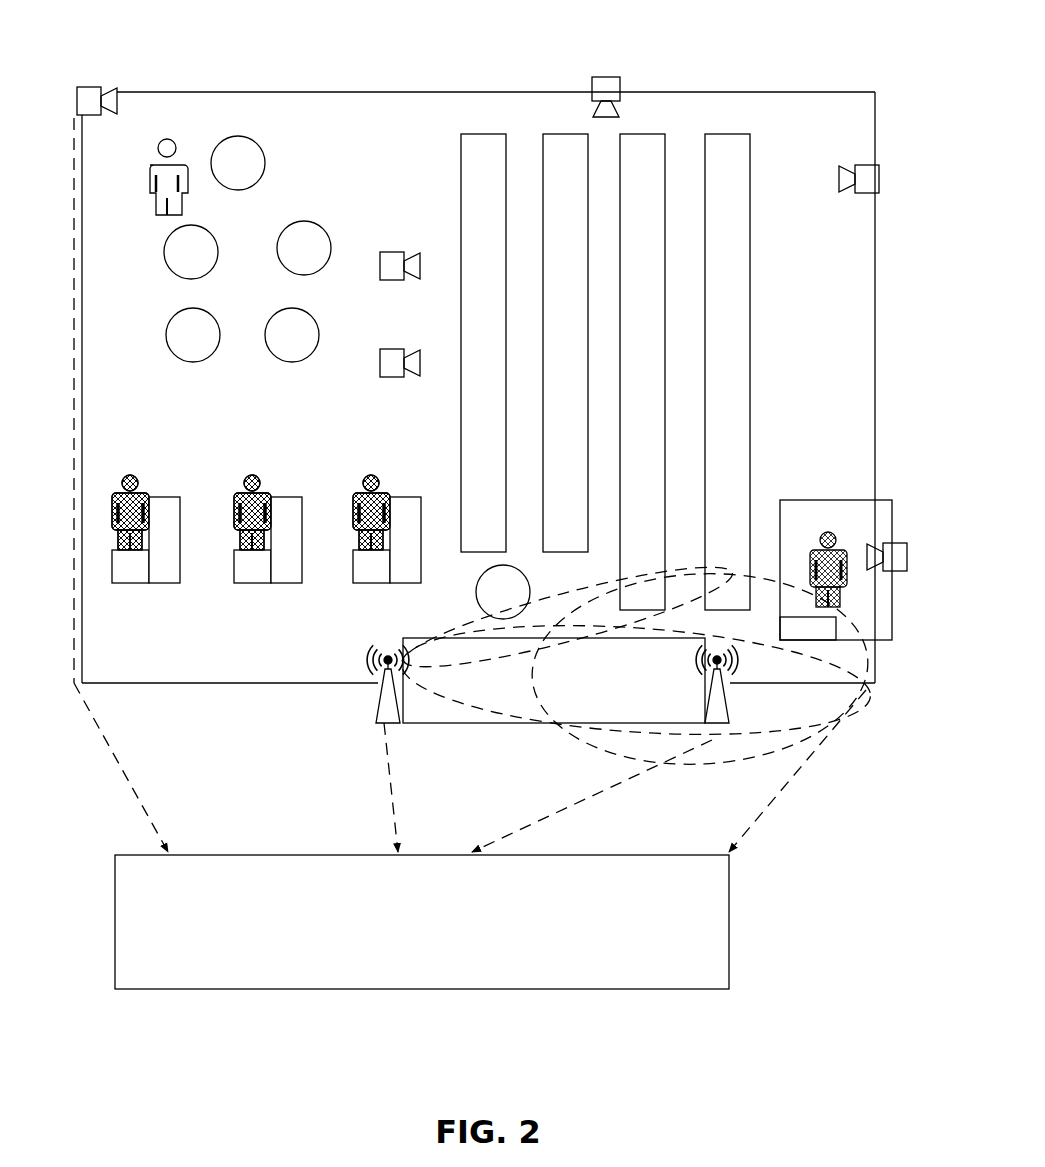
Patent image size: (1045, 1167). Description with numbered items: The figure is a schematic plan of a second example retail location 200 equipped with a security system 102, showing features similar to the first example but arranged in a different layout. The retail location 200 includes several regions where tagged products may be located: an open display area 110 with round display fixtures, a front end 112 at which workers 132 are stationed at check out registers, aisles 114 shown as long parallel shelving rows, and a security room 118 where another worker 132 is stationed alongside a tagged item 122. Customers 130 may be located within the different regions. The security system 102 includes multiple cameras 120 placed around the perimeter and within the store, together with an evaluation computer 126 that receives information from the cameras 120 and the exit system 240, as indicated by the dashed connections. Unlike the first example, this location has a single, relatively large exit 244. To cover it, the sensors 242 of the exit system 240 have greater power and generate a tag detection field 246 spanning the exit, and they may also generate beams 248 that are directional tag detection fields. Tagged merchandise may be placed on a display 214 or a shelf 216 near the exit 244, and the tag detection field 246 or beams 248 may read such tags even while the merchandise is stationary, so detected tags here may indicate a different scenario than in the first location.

The security system 102 is at (101, 54).
The second example retail location 200 is at (150, 82).
The open display area 110 is at (288, 102).
The aisles 114 is at (523, 130).
The cameras 120 is at (77, 88).
The customers 130 is at (168, 139).
The front end 112 is at (196, 440).
The workers 132 is at (131, 475).
The security room 118 is at (830, 508).
The tagged item 122 is at (838, 626).
The display 214 is at (477, 600).
The shelf 216 is at (619, 580).
The exit 244 is at (408, 638).
The sensors 242 is at (377, 714).
The tag detection field 246 is at (830, 717).
The beams 248 is at (545, 615).
The exit system 240 is at (340, 748).
The evaluation computer 126 is at (695, 855).